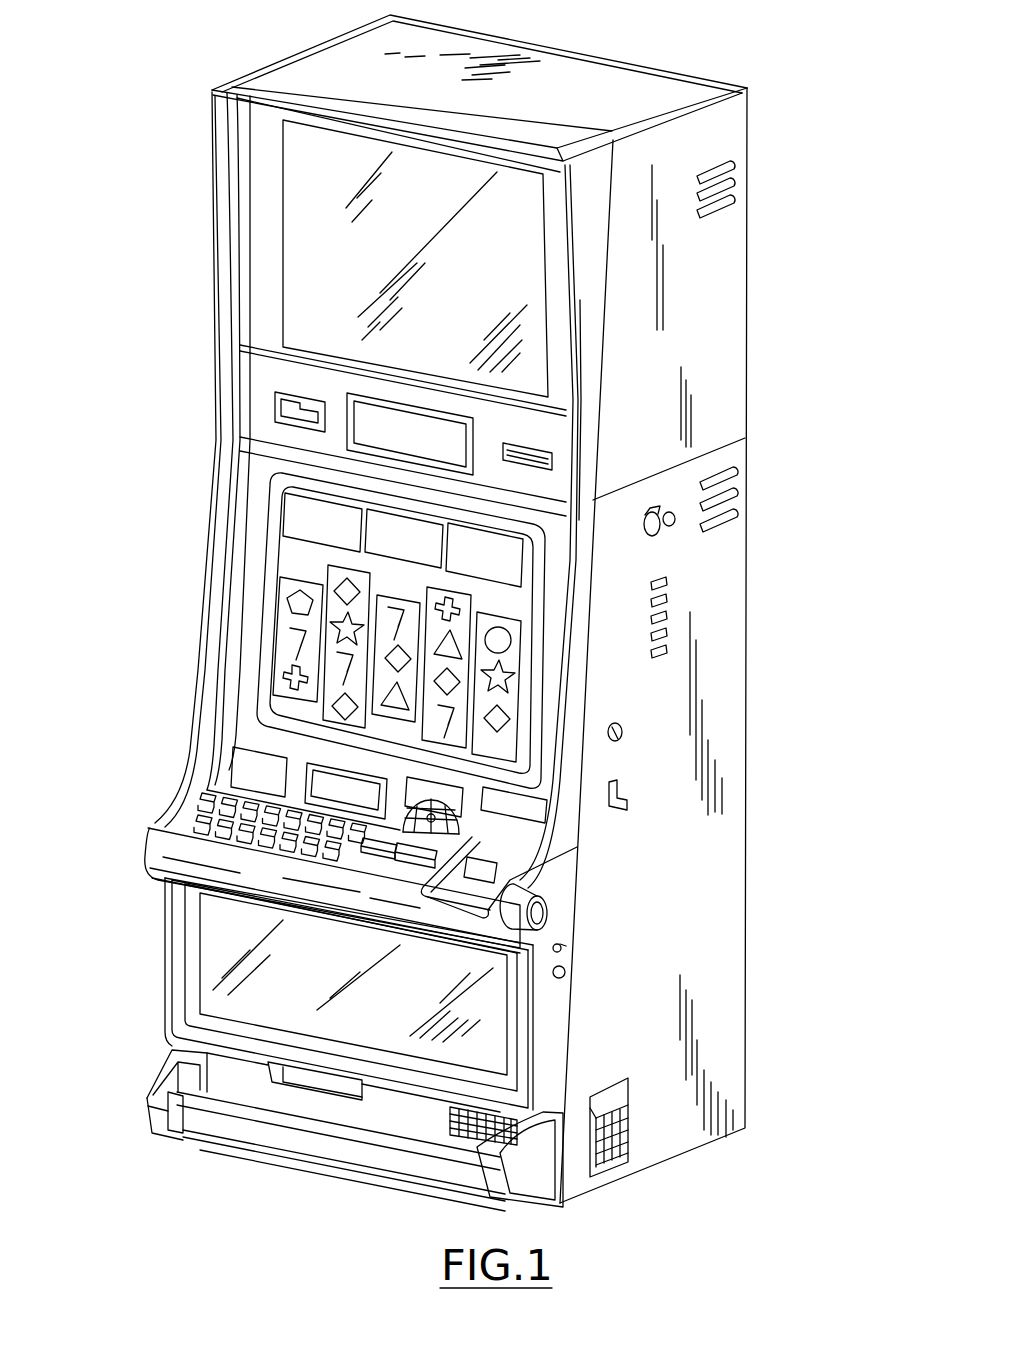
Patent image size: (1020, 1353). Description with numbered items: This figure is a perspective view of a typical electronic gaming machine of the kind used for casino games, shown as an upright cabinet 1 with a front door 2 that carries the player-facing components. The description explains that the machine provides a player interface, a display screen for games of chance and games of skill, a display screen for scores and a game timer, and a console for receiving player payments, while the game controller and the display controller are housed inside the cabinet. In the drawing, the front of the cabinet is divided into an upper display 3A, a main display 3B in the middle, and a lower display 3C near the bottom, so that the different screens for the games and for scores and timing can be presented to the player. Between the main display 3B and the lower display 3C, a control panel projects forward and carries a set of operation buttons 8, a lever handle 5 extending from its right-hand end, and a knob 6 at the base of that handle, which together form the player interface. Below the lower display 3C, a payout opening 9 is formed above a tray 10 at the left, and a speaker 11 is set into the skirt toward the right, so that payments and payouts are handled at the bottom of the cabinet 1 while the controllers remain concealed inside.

The gaming machine cabinet 1 is at (730, 242).
The front door 2 is at (580, 313).
The upper display 3A is at (325, 248).
The main display 3B is at (290, 553).
The lower display 3C is at (237, 942).
The lever handle 5 is at (547, 833).
The knob 6 is at (548, 907).
The operation buttons 8 is at (243, 787).
The payout opening 9 is at (326, 1082).
The tray 10 is at (262, 1090).
The speaker 11 is at (450, 1124).